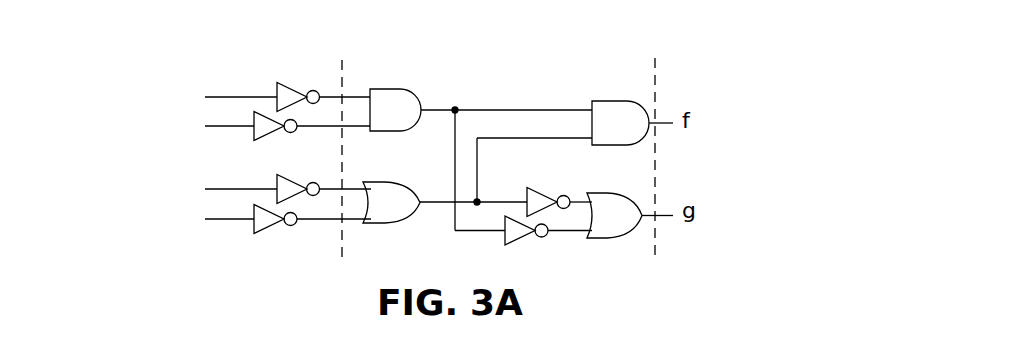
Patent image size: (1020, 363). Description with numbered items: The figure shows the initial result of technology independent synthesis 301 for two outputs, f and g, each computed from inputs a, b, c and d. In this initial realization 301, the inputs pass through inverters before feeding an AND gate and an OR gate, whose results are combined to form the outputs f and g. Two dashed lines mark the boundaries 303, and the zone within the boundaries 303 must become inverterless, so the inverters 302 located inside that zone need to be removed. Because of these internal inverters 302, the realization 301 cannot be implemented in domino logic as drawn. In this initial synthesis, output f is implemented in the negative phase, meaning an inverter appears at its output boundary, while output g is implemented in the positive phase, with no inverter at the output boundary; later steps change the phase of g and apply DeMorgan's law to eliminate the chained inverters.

The technology independent synthesis 301 is at (150, 142).
The inverters 302 is at (562, 253).
The boundaries 303 is at (525, 82).